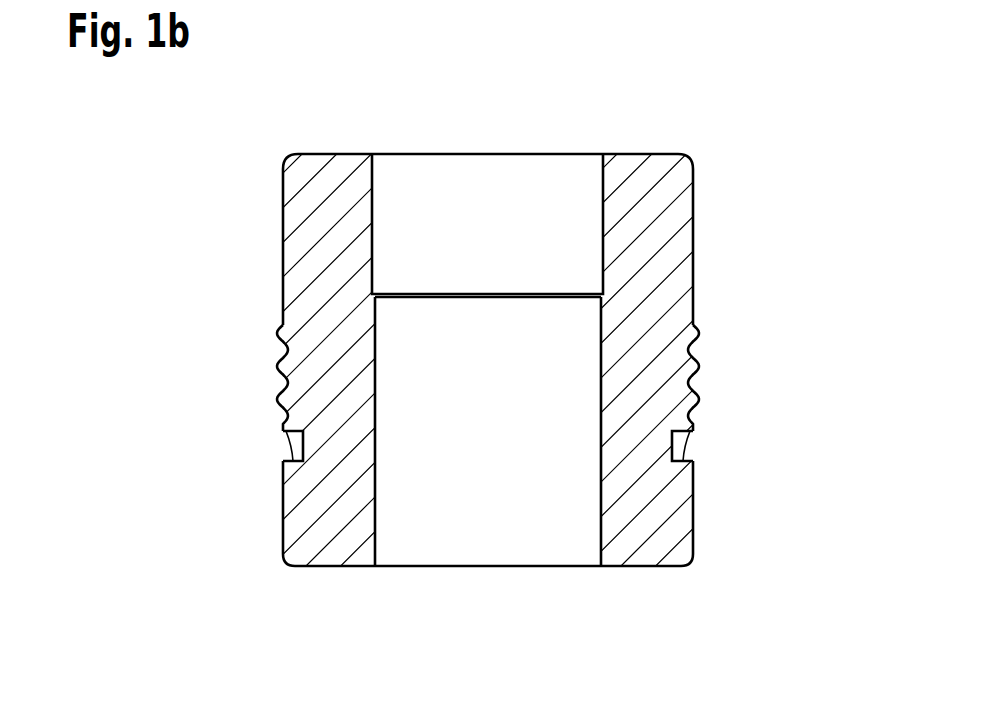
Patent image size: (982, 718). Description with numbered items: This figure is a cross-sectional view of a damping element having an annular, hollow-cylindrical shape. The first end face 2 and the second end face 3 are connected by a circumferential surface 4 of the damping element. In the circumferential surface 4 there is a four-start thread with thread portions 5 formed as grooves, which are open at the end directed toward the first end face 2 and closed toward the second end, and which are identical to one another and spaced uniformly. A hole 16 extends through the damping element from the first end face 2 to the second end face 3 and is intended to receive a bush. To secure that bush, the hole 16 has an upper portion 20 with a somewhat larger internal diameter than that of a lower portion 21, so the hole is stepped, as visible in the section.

The first end face 2 is at (342, 583).
The second end face 3 is at (647, 138).
The circumferential surface 4 is at (710, 279).
The thread portions 5 is at (302, 452).
The hole 16 is at (491, 156).
The upper portion 20 is at (370, 243).
The lower portion 21 is at (374, 380).